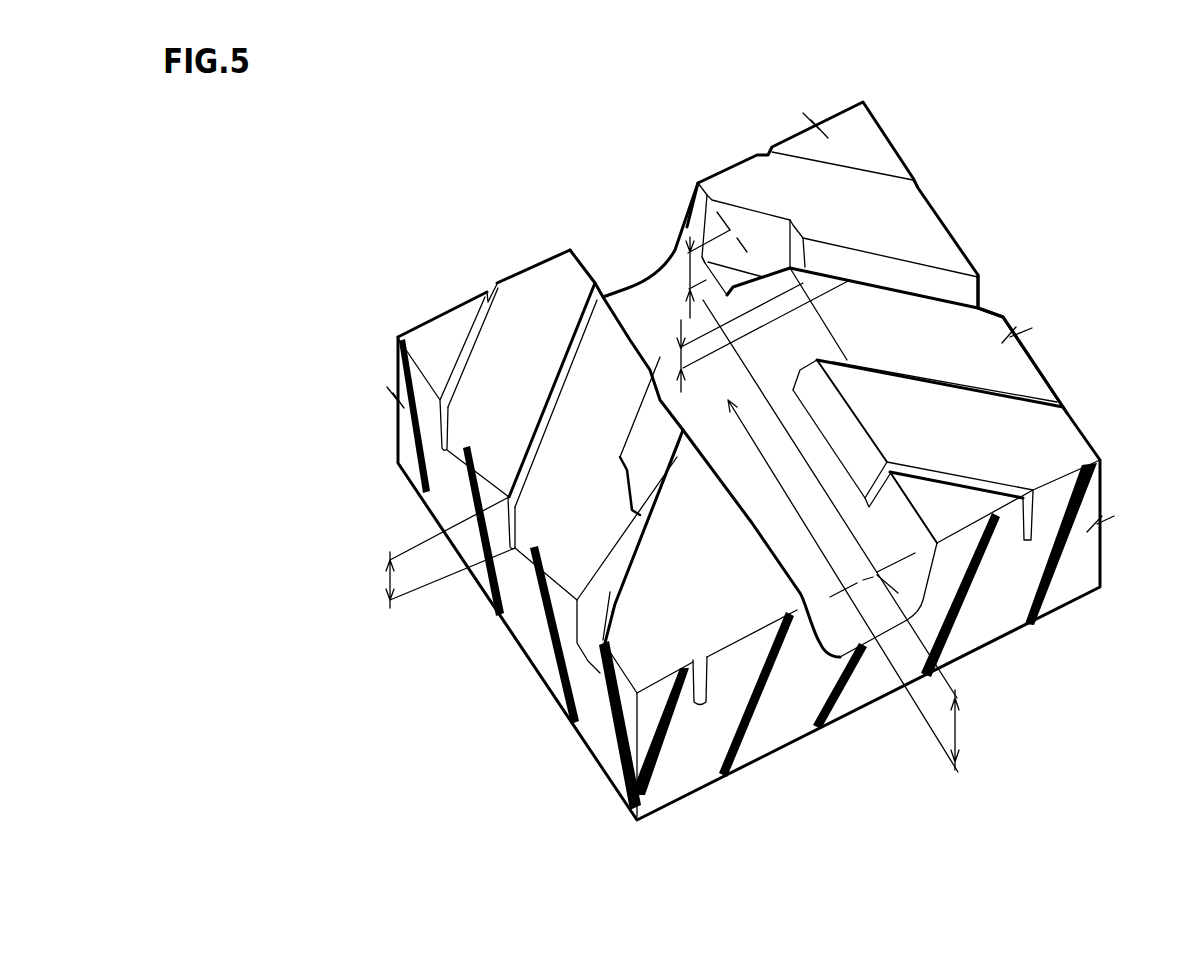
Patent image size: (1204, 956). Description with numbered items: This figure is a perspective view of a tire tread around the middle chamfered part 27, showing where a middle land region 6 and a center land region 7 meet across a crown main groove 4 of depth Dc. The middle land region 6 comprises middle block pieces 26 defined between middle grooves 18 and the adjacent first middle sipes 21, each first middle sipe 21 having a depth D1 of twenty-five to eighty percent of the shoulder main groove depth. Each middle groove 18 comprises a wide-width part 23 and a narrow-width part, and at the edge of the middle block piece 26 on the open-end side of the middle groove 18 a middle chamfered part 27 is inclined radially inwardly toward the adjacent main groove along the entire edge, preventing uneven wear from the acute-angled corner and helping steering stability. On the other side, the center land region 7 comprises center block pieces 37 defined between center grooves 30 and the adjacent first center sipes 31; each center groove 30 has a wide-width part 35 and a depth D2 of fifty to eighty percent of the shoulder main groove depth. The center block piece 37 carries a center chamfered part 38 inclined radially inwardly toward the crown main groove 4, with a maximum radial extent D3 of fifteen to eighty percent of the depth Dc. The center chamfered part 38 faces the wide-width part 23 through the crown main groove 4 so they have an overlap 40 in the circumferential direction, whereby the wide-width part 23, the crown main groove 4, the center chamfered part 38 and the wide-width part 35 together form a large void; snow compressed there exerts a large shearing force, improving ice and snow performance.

The crown main groove 4 is at (643, 233).
The middle land region 6 is at (762, 594).
The center land region 7 is at (1022, 453).
The middle groove 18 is at (657, 416).
The wide-width part 23 is at (640, 407).
The first middle sipe 21 is at (537, 442).
The middle block piece 26 is at (677, 618).
The middle chamfered part 27 is at (720, 497).
The center groove 30 is at (763, 235).
The wide-width part 35 is at (703, 260).
The first center sipe 31 is at (990, 390).
The center block piece 37 is at (973, 343).
The center chamfered part 38 is at (798, 325).
The overlap 40 is at (876, 643).
The depth of the first middle sipe D1 is at (431, 552).
The depth of the center groove D2 is at (690, 268).
The maximum radial extent of the center chamfered part D3 is at (665, 345).
The depth of the crown main groove Dc is at (973, 730).